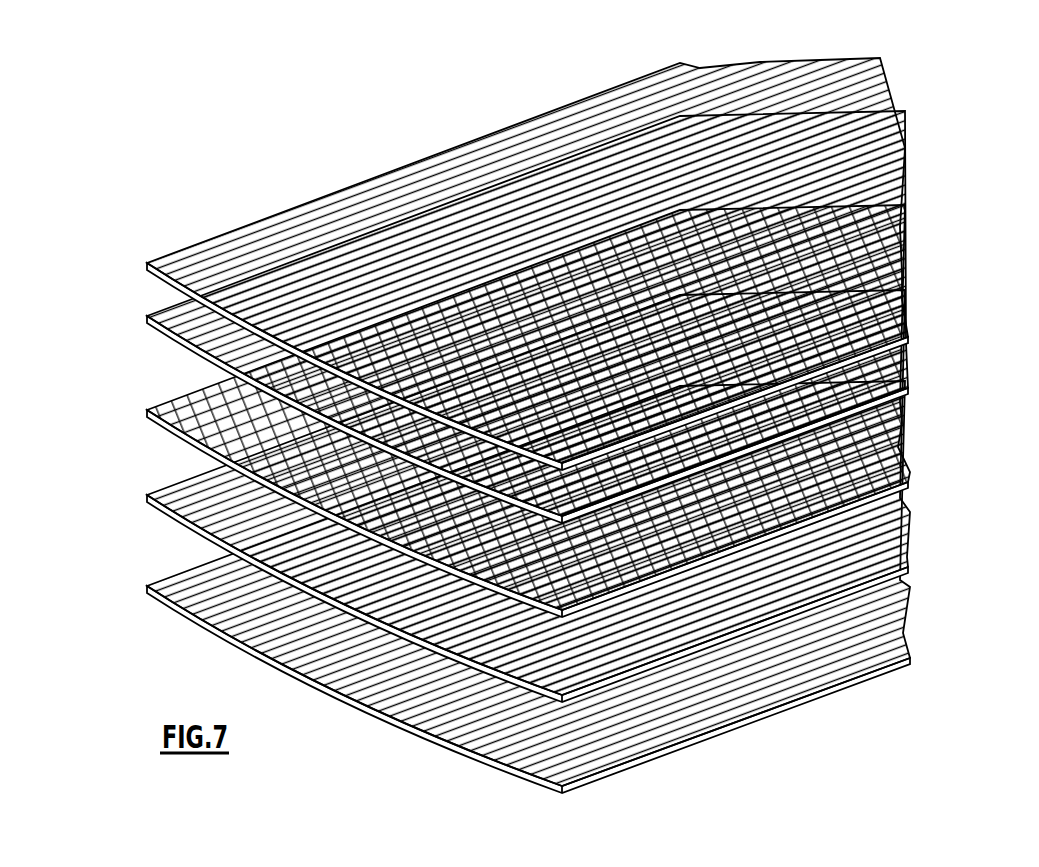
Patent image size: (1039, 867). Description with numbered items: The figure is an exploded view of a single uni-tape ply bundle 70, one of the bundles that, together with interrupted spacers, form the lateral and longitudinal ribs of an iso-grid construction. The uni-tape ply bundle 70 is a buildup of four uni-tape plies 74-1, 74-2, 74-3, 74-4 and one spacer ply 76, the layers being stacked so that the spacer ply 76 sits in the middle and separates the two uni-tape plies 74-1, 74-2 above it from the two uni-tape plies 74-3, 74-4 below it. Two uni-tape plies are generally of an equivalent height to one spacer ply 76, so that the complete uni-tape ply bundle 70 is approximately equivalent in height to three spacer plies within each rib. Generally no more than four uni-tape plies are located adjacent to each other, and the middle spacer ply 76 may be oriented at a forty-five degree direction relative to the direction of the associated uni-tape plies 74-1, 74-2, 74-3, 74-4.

The uni-tape ply bundle 70 is at (530, 425).
The uni-tape ply 74-1 is at (908, 340).
The uni-tape ply 74-2 is at (908, 388).
The spacer ply 76 is at (908, 482).
The uni-tape ply 74-3 is at (908, 568).
The uni-tape ply 74-4 is at (888, 670).